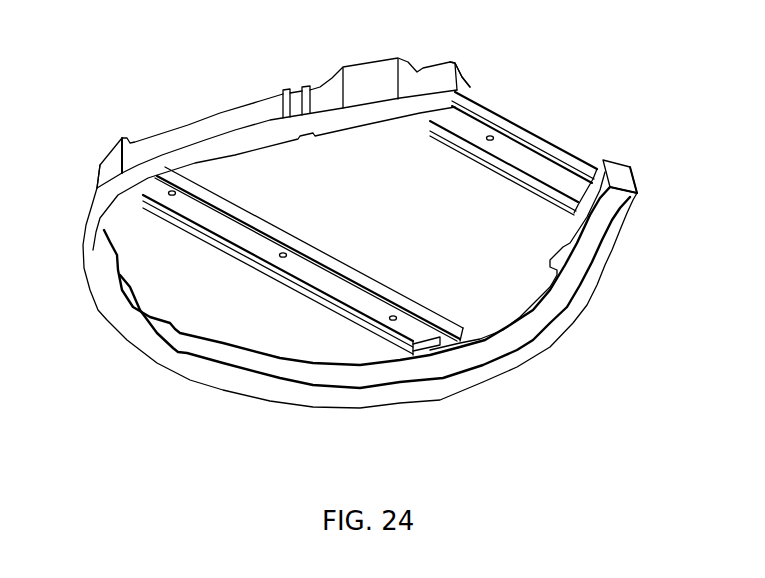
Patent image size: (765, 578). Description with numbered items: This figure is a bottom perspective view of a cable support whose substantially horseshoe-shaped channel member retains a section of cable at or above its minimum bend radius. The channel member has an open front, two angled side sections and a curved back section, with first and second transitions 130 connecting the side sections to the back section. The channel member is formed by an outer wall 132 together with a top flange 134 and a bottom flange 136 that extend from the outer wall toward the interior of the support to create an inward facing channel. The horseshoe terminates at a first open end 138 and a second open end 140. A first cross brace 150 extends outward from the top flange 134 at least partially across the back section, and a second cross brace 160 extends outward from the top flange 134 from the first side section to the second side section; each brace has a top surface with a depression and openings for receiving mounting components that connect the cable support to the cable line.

The transition 130 is at (207, 127).
The outer wall 132 is at (640, 182).
The top flange 134 is at (333, 372).
The bottom flange 136 is at (227, 387).
The first open end 138 is at (462, 86).
The second open end 140 is at (611, 172).
The first cross brace 150 is at (193, 237).
The second cross brace 160 is at (532, 127).